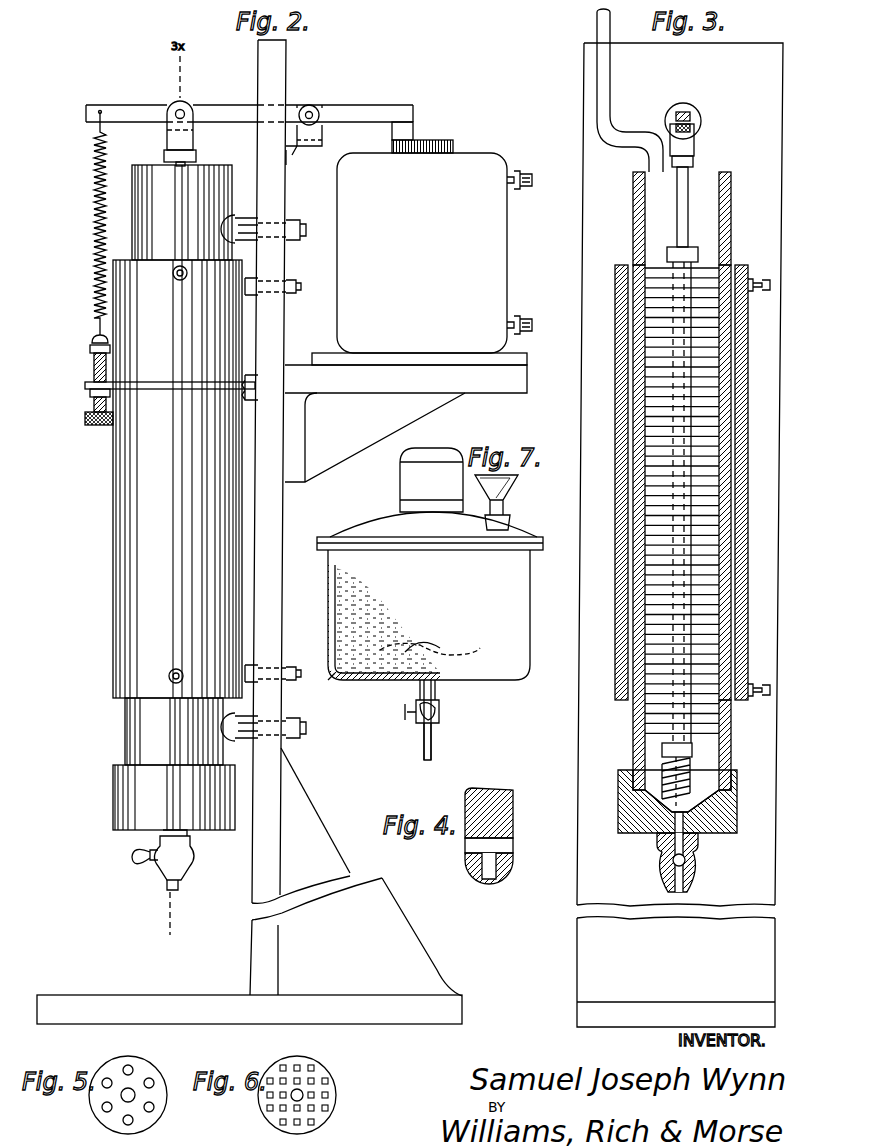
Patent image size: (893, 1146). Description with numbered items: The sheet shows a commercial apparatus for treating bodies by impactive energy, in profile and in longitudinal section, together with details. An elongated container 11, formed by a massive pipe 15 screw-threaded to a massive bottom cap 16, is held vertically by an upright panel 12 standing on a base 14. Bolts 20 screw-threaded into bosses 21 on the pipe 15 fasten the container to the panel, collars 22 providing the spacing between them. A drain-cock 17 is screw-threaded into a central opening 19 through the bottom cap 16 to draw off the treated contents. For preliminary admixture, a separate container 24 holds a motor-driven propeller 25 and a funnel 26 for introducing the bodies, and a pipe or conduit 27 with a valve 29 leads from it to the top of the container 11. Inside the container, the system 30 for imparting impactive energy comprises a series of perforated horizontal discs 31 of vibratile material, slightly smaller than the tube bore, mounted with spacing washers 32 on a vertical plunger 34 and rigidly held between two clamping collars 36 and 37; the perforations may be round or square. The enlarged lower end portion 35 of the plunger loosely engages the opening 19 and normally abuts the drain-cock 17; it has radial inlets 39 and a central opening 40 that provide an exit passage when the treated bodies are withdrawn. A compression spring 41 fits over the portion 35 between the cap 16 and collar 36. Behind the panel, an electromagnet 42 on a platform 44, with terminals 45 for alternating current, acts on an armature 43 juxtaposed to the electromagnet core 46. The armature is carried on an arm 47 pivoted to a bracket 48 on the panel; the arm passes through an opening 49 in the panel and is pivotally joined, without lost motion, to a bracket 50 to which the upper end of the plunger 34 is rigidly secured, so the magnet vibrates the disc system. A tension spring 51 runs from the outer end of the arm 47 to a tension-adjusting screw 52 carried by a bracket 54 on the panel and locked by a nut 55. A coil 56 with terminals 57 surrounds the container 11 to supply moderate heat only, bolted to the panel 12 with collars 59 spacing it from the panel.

In FIG. 2, the elongated container 11 is at (120, 734).
In FIG. 3, the elongated container 11 is at (628, 738).
In FIG. 2, the upright panel 12 is at (279, 600).
In FIG. 3, the upright panel 12 is at (778, 632).
In FIG. 2, the base 14 is at (190, 1001).
In FIG. 3, the base 14 is at (676, 972).
In FIG. 3, the pipe 15 is at (731, 740).
In FIG. 2, the bottom cap 16 is at (113, 797).
In FIG. 3, the bottom cap 16 is at (618, 808).
In FIG. 2, the drain-cock 17 is at (176, 870).
In FIG. 3, the drain-cock 17 is at (692, 862).
In FIG. 3, the central opening 19 is at (737, 808).
In FIG. 2, the bolts 20 is at (300, 230).
In FIG. 2, the bosses 21 is at (230, 240).
In FIG. 2, the collars 22 is at (240, 218).
In FIG. 7, the container 24 is at (530, 629).
In FIG. 7, the motor-driven propeller 25 is at (421, 680).
In FIG. 7, the funnel 26 is at (506, 498).
In FIG. 7, the pipe or conduit 27 is at (423, 748).
In FIG. 3, the pipe or conduit 27 is at (610, 82).
In FIG. 7, the valve 29 is at (408, 713).
In FIG. 3, the system for imparting impactive energy 30 is at (649, 258).
In FIG. 5, the horizontal discs 31 is at (158, 1112).
In FIG. 6, the horizontal discs 31 is at (334, 1092).
In FIG. 3, the horizontal discs 31 is at (716, 610).
In FIG. 3, the spacing washers 32 is at (692, 370).
In FIG. 3, the vertical plunger 34 is at (688, 222).
In FIG. 4, the lower end portion 35 is at (513, 798).
In FIG. 3, the lower end portion 35 is at (690, 772).
In FIG. 3, the clamping collar 36 is at (692, 750).
In FIG. 3, the clamping collar 37 is at (698, 252).
In FIG. 4, the radial inlets 39 is at (465, 858).
In FIG. 4, the central opening 40 is at (489, 883).
In FIG. 3, the compression spring 41 is at (668, 776).
In FIG. 2, the electromagnet 42 is at (490, 158).
In FIG. 2, the armature 43 is at (413, 131).
In FIG. 2, the platform 44 is at (373, 390).
In FIG. 2, the terminals 45 is at (518, 189).
In FIG. 2, the electromagnet core 46 is at (448, 141).
In FIG. 2, the arm 47 is at (356, 114).
In FIG. 3, the arm 47 is at (690, 112).
In FIG. 2, the bracket 48 is at (310, 146).
In FIG. 2, the opening 49 is at (288, 102).
In FIG. 3, the opening 49 is at (676, 112).
In FIG. 2, the bracket 50 is at (193, 145).
In FIG. 3, the bracket 50 is at (695, 146).
In FIG. 2, the tension spring 51 is at (94, 238).
In FIG. 2, the tension-adjusting screw 52 is at (92, 425).
In FIG. 2, the bracket 54 is at (165, 386).
In FIG. 2, the nut 55 is at (90, 393).
In FIG. 2, the coil 56 is at (120, 524).
In FIG. 3, the coil 56 is at (616, 512).
In FIG. 2, the terminals 57 is at (173, 275).
In FIG. 3, the terminals 57 is at (753, 280).
In FIG. 2, the collars 59 is at (253, 294).